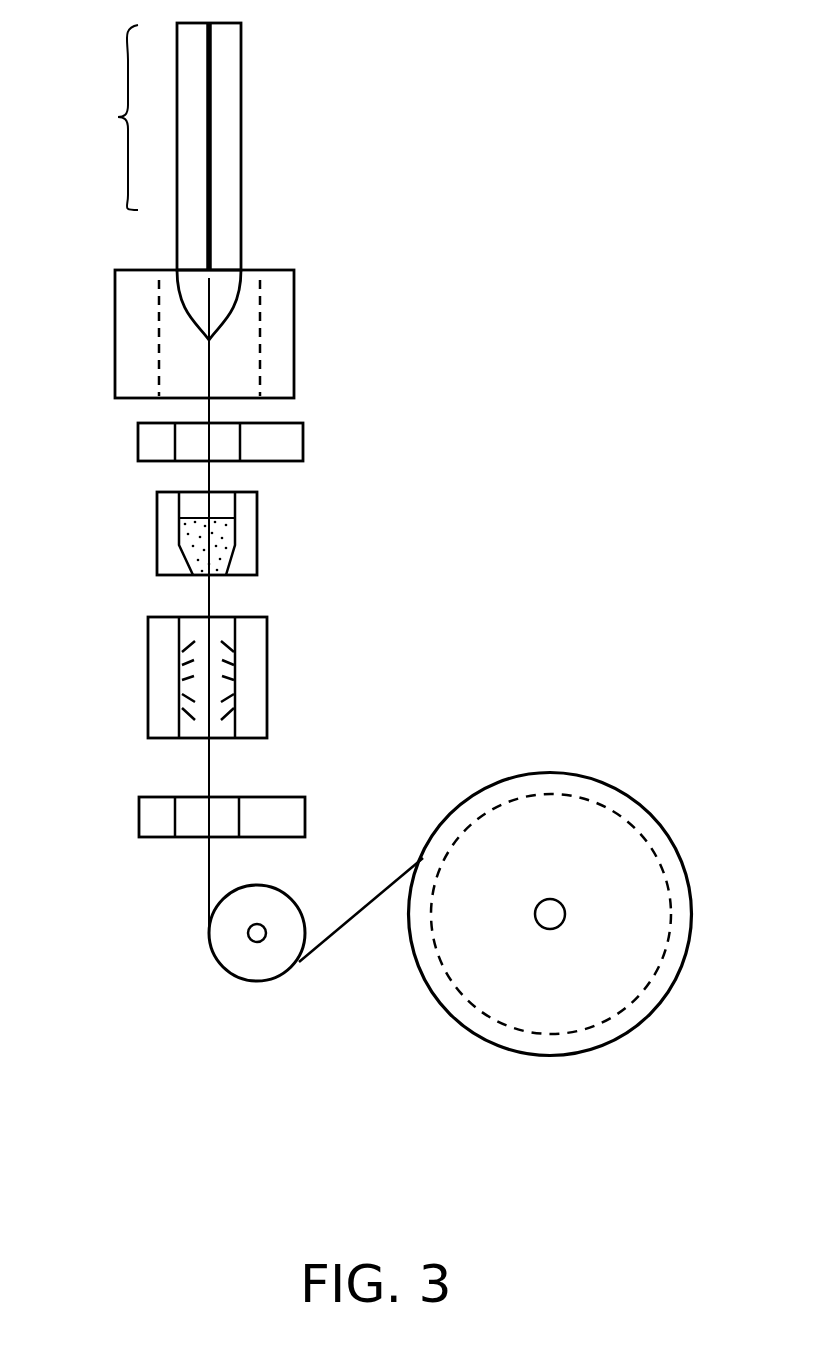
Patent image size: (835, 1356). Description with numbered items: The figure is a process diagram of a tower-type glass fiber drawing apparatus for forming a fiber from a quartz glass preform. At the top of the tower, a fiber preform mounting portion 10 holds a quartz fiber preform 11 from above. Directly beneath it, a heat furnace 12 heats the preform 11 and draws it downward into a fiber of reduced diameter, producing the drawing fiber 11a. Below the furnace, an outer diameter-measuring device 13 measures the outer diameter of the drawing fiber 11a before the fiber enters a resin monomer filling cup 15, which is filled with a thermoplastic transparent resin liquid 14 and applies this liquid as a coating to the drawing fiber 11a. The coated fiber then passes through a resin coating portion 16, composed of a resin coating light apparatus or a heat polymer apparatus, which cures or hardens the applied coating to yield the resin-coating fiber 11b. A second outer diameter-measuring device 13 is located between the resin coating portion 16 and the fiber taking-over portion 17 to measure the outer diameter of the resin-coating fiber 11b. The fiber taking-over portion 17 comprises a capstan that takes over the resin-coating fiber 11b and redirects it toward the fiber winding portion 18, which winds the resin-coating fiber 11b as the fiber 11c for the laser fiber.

The fiber preform mounting portion 10 is at (94, 117).
The quartz fiber preform 11 is at (242, 99).
The drawing fiber 11a is at (208, 473).
The resin-coating fiber 11b is at (357, 920).
The fiber for the laser fiber 11c is at (660, 967).
The heat furnace 12 is at (297, 303).
The outer diameter-measuring device 13 is at (304, 430).
The thermoplastic transparent resin liquid 14 is at (227, 532).
The resin monomer filling cup 15 is at (258, 562).
The resin coating portion 16 is at (268, 675).
The fiber taking-over portion 17 is at (218, 935).
The fiber winding portion 18 is at (627, 851).